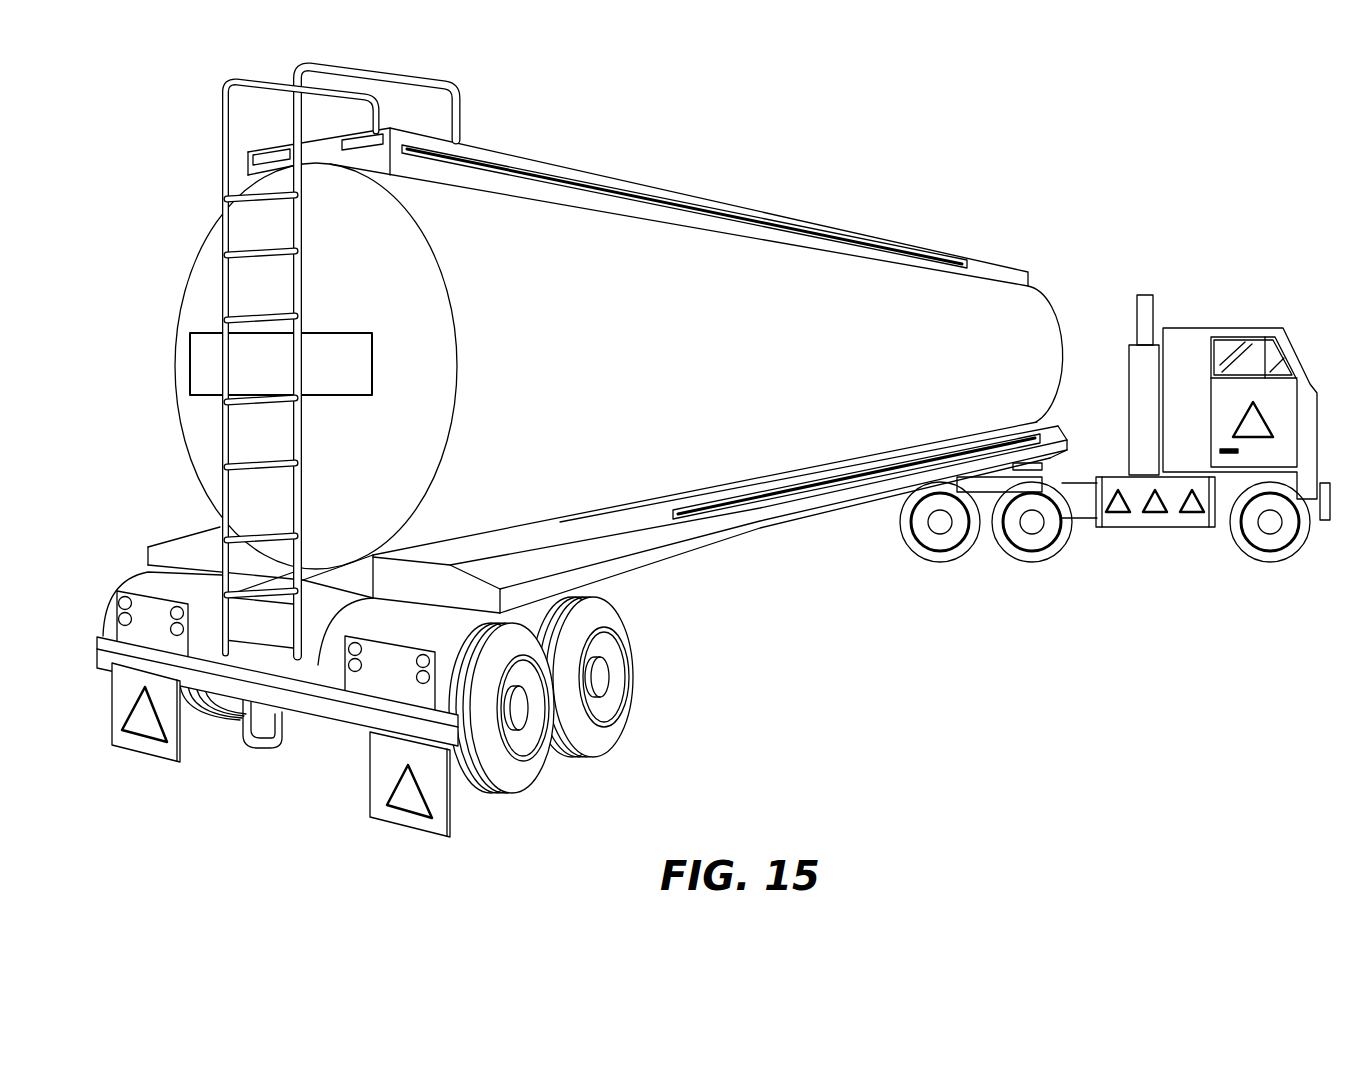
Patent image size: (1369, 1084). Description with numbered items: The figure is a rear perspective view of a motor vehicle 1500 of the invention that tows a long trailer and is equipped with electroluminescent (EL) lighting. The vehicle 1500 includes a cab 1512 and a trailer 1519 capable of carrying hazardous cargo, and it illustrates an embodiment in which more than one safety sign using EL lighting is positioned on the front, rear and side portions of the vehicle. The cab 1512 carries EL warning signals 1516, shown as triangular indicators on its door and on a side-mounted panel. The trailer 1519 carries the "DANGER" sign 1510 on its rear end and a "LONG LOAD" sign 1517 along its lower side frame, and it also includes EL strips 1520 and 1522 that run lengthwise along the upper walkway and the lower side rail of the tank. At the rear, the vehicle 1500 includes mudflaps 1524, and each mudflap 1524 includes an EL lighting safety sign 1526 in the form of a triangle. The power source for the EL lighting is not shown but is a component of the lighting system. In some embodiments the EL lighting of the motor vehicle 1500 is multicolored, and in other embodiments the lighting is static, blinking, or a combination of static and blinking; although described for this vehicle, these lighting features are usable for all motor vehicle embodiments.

The vehicle 1500 is at (587, 469).
The "DANGER" sign 1510 is at (190, 358).
The cab 1512 is at (1134, 413).
The EL warning signals 1516 is at (1262, 428).
The "LONG LOAD" sign 1517 is at (673, 527).
The trailer 1519 is at (1035, 302).
The EL strip 1520 is at (757, 212).
The EL strip 1522 is at (1042, 426).
The mudflaps 1524 is at (110, 699).
The EL lighting safety sign 1526 is at (150, 728).